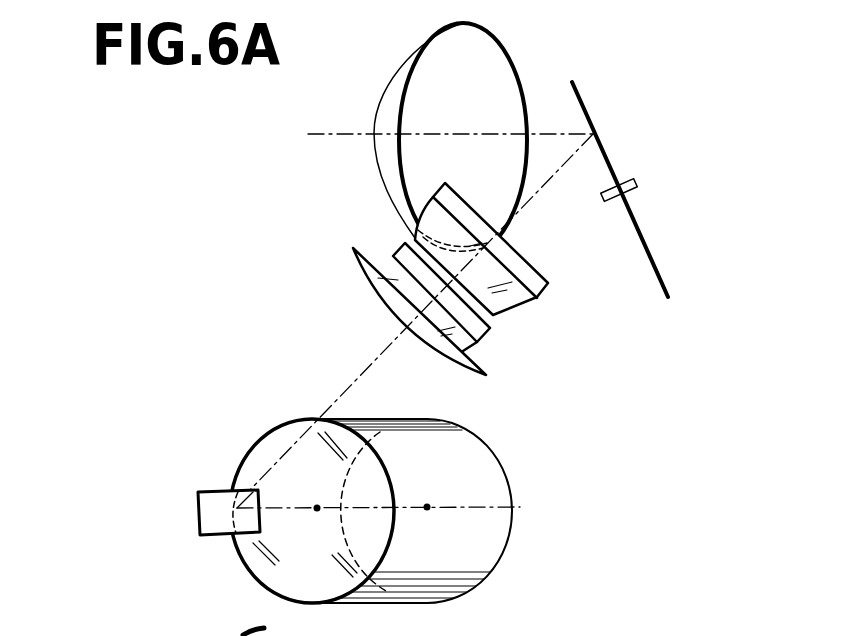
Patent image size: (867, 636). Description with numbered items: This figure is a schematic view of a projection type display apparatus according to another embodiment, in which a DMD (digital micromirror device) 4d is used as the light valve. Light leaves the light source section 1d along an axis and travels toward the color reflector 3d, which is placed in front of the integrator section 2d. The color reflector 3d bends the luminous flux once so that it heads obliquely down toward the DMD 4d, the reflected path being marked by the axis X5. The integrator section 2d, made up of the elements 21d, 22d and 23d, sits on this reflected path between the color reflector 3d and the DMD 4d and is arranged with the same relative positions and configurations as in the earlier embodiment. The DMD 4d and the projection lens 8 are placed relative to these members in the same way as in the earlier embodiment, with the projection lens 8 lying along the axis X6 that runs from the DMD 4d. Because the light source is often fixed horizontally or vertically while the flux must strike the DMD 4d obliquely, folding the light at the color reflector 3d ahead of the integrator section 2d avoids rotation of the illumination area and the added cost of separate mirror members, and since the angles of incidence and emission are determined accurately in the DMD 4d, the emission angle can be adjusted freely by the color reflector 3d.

The light source section 1d is at (363, 90).
The integrator section 2d is at (502, 298).
The integrator section element 21d is at (533, 299).
The integrator section element 22d is at (478, 342).
The integrator section element 23d is at (485, 376).
The color reflector 3d is at (572, 92).
The DMD (digital micromirror device) 4d is at (208, 510).
The projection lens 8 is at (487, 514).
The optical axis X5 is at (365, 370).
The rotation axis X6 is at (275, 510).